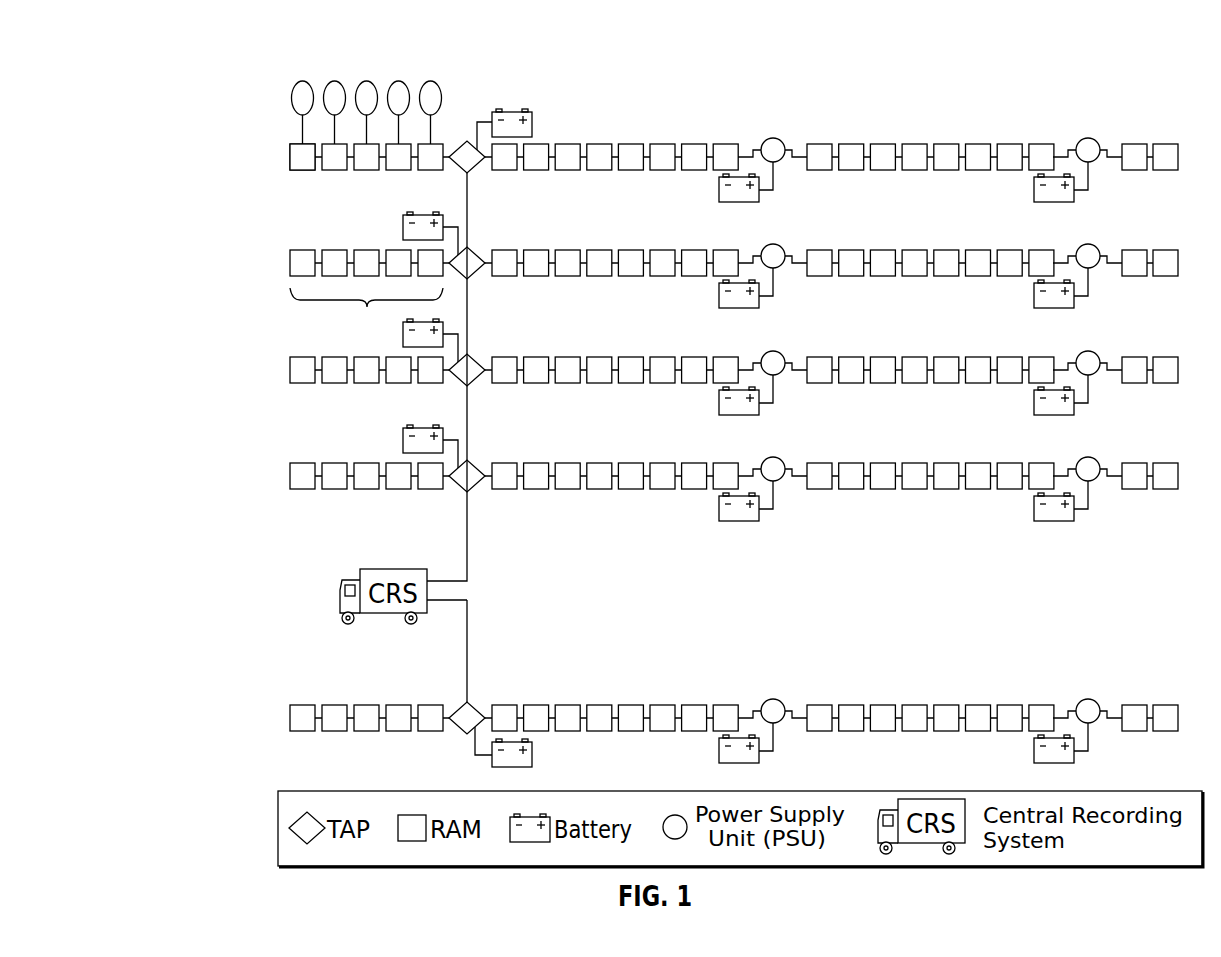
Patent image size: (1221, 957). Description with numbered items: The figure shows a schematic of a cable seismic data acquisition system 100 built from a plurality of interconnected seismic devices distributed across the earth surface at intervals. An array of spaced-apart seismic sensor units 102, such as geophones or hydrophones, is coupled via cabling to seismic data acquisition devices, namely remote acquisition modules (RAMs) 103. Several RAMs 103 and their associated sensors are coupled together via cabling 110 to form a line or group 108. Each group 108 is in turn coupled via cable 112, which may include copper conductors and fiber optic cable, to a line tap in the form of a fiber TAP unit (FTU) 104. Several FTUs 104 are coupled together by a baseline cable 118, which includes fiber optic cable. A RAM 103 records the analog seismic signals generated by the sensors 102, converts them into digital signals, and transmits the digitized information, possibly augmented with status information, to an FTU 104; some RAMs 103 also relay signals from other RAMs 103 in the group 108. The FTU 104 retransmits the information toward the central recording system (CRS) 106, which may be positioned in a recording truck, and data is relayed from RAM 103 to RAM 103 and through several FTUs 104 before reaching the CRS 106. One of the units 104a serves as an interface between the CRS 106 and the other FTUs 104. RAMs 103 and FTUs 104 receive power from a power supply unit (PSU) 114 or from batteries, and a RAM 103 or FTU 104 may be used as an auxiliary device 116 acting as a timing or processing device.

The cable seismic data acquisition system 100 is at (656, 394).
The seismic sensor unit 102 is at (291, 101).
The remote acquisition module (RAM) 103 is at (290, 158).
The fiber TAP unit (FTU) 104 is at (463, 171).
The interface FTU unit 104a is at (460, 487).
The central recording system (CRS) 106 is at (336, 590).
The line or group 108 is at (369, 297).
The cabling 110 is at (320, 168).
The cable 112 is at (452, 151).
The power supply unit (PSU) 114 is at (765, 139).
The auxiliary device 116 is at (360, 576).
The baseline cable 118 is at (470, 321).